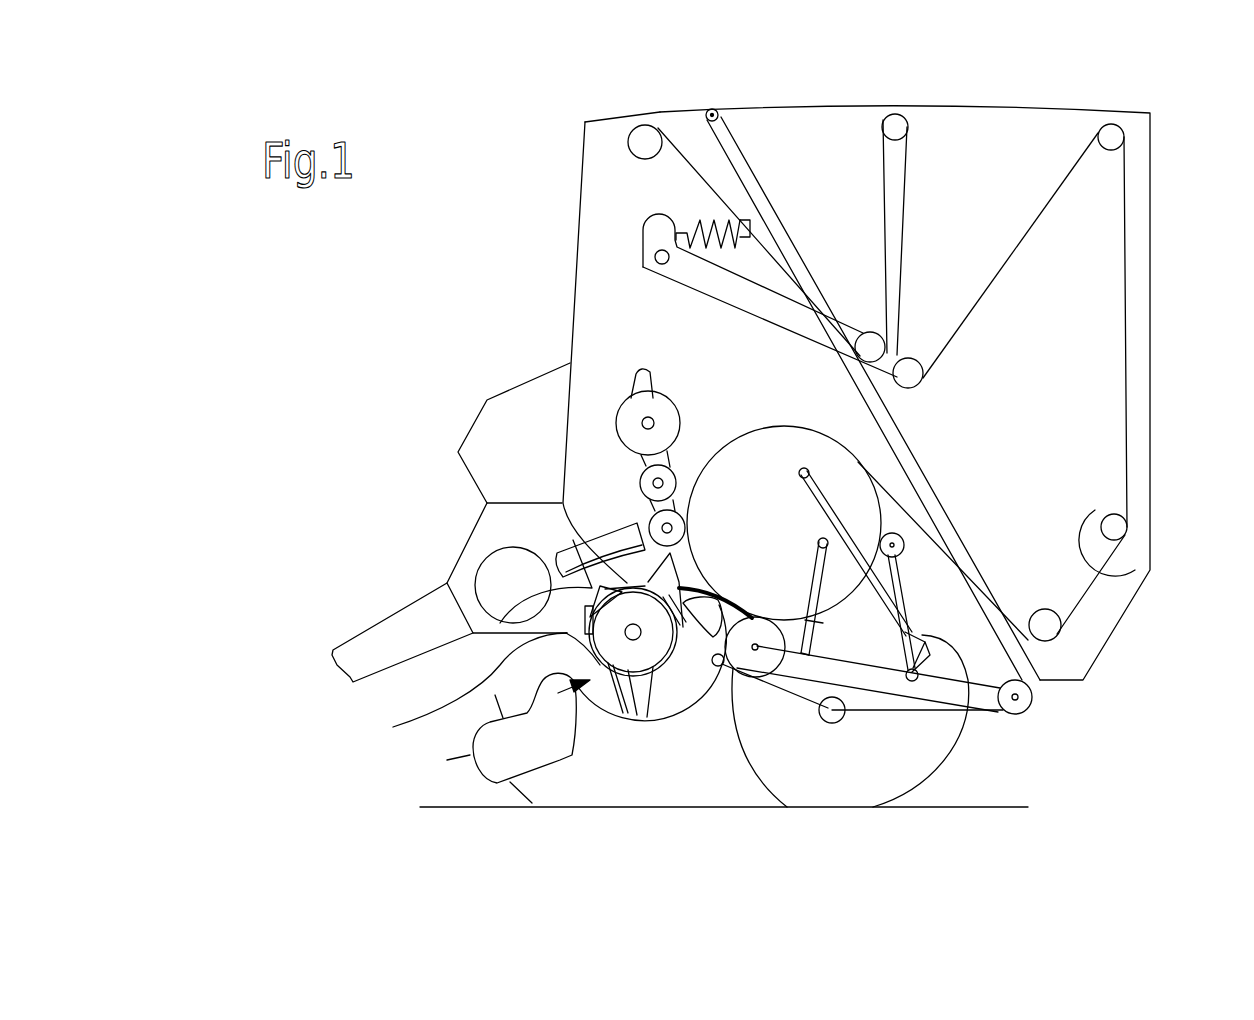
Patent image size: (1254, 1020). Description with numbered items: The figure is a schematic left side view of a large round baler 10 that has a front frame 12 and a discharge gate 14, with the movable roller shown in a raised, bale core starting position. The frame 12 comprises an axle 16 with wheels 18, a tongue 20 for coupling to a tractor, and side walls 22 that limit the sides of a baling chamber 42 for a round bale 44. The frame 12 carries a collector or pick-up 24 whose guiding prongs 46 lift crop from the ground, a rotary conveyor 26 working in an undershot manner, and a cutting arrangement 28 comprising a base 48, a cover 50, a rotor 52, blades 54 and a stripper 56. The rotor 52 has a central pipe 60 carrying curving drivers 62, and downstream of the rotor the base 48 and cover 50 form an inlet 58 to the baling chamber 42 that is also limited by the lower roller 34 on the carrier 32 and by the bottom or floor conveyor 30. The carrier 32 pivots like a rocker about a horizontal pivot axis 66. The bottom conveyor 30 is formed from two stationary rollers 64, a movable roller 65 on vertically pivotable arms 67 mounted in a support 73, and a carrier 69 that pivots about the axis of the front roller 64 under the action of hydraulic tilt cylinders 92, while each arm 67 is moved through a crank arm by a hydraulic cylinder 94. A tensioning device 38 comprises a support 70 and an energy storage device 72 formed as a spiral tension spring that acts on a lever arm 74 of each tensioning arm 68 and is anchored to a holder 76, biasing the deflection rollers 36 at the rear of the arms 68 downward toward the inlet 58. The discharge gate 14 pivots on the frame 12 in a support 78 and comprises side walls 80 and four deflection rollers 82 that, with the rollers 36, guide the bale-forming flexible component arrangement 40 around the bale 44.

The large round baler 10 is at (335, 327).
The front frame 12 is at (573, 290).
The discharge gate 14 is at (1150, 268).
The axle 16 is at (827, 720).
The wheels 18 is at (862, 783).
The tongue 20 is at (380, 640).
The side walls 22 is at (590, 320).
The collector or pick-up 24 is at (450, 784).
The rotary conveyor 26 is at (493, 573).
The cutting arrangement 28 is at (557, 683).
The bottom or floor conveyor 30 is at (1000, 724).
The carrier 32 is at (647, 453).
The rollers 34 is at (630, 422).
The deflection rollers 36 is at (630, 137).
The tensioning device 38 is at (694, 305).
The bale-forming flexible component arrangement 40 is at (907, 183).
The baling chamber 42 is at (693, 462).
The round bale 44 is at (790, 457).
The guiding prongs 46 is at (487, 807).
The base 48 is at (643, 718).
The cover 50 is at (593, 557).
The rotor 52 is at (587, 638).
The blades 54 is at (484, 688).
The stripper 56 is at (670, 720).
The inlet 58 is at (724, 568).
The central pipe 60 is at (630, 700).
The curving drivers 62 is at (493, 622).
The stationary rollers 64 is at (751, 665).
The movable roller 65 is at (877, 510).
The horizontal pivot axis 66 is at (650, 493).
The arms 67 is at (920, 635).
The tensioning arms 68 is at (727, 293).
The carrier 69 is at (910, 682).
The support 70 is at (655, 257).
The energy storage device 72 is at (697, 230).
The support 73 is at (945, 700).
The lever arm 74 is at (645, 228).
The holder 76 is at (743, 220).
The support 78 is at (712, 108).
The side walls 80 is at (1060, 486).
The deflection rollers 82 is at (882, 120).
The hydraulic tilt cylinders 92 is at (816, 573).
The hydraulic cylinder 94 is at (840, 517).